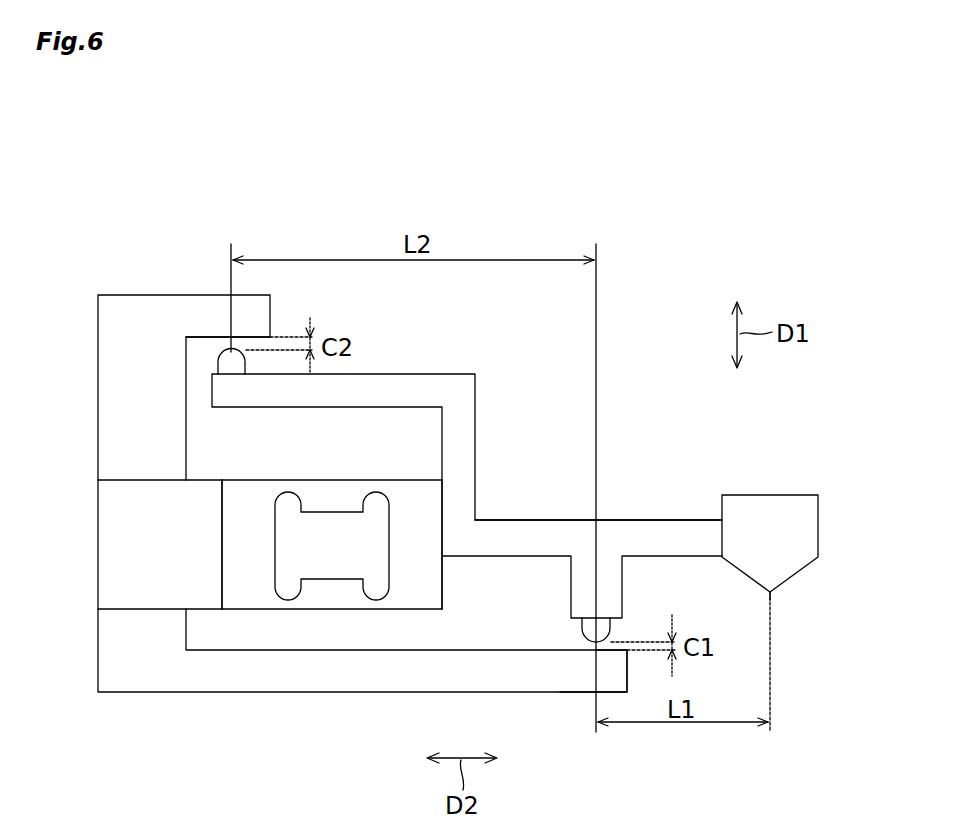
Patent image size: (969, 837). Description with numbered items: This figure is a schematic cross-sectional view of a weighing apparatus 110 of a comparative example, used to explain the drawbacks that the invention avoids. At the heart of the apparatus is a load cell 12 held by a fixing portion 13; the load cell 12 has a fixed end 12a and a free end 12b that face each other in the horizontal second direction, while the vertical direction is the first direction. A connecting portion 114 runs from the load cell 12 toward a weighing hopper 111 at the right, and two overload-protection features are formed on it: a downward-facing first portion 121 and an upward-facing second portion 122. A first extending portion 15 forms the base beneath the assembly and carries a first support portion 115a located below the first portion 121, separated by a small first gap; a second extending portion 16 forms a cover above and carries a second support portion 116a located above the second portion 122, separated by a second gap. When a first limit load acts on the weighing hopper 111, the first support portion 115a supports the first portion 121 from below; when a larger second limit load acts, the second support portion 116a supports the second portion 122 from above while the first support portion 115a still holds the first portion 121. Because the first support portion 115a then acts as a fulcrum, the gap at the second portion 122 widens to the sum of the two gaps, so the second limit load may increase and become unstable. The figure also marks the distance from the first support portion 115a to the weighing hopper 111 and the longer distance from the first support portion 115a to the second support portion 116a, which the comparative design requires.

The weighing apparatus 110 is at (757, 170).
The weighing hopper 111 is at (818, 527).
The connecting portion 114 is at (656, 518).
The first support portion 115a is at (580, 678).
The second support portion 116a is at (222, 313).
The first portion 121 is at (602, 632).
The second portion 122 is at (222, 365).
The load cell 12 is at (335, 480).
The fixed end 12a is at (221, 550).
The free end 12b is at (443, 580).
The fixing portion 13 is at (98, 545).
The first extending portion 15 is at (335, 695).
The second extending portion 16 is at (118, 303).